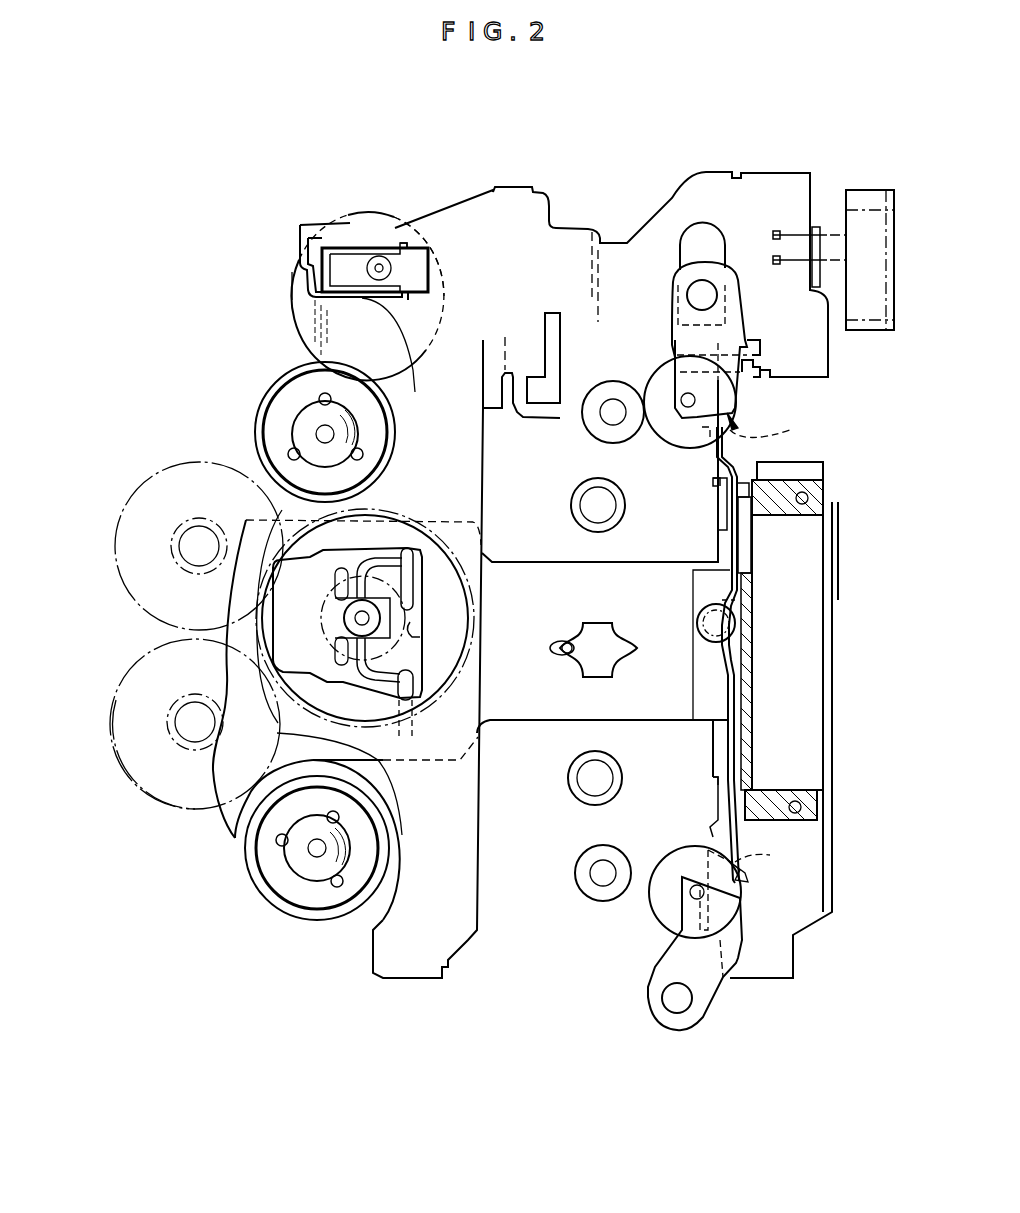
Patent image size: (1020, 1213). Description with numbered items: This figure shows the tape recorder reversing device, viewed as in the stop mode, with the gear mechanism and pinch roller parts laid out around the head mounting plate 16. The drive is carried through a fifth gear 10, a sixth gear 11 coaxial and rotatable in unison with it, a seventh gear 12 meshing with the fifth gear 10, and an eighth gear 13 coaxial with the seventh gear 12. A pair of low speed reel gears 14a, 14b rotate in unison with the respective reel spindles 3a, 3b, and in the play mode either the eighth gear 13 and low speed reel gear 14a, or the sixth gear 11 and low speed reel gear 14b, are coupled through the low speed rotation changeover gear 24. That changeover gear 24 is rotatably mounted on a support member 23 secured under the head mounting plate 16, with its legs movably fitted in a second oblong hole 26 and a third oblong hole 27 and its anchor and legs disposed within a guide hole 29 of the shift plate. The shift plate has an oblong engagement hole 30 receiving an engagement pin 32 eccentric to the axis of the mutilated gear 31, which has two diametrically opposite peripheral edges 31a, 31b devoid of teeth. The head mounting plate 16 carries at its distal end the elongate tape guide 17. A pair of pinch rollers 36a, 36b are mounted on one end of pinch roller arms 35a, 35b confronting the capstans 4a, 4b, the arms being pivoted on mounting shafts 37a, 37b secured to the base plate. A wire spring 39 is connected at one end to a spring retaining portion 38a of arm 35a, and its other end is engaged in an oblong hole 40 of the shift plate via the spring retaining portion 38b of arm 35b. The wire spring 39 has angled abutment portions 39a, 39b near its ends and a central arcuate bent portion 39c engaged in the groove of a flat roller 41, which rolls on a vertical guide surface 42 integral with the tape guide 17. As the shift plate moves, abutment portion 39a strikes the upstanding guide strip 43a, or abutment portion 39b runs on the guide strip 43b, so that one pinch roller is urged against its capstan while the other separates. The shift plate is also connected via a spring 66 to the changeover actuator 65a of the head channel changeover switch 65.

The reel spindle 3a is at (350, 868).
The reel spindle 3b is at (360, 440).
The capstan 4a is at (575, 875).
The capstan 4b is at (590, 420).
The fifth gear 10 is at (186, 463).
The sixth gear 11 is at (173, 538).
The seventh gear 12 is at (177, 807).
The eighth gear 13 is at (170, 708).
The low speed reel gear 14a is at (380, 835).
The low speed reel gear 14b is at (385, 405).
The head mounting plate 16 is at (525, 722).
The tape guide 17 is at (815, 590).
The support member 23 is at (345, 615).
The low speed rotation changeover gear 24 is at (398, 520).
The second oblong hole 26 is at (412, 688).
The third oblong hole 27 is at (413, 578).
The guide hole 29 is at (420, 636).
The engagement hole 30 is at (415, 280).
The mutilated gear 31 is at (288, 295).
The peripheral edge devoid of teeth 31a is at (297, 330).
The peripheral edge devoid of teeth 31b is at (440, 262).
The engagement pin 32 is at (410, 250).
The pinch roller arm 35a is at (662, 950).
The pinch roller arm 35b is at (745, 318).
The pinch roller 36a is at (660, 895).
The pinch roller 36b is at (655, 430).
The mounting shaft 37a is at (662, 1000).
The mounting shaft 37b is at (710, 283).
The spring retaining portion 38a is at (762, 856).
The spring retaining portion 38b is at (760, 435).
The wire spring 39 is at (712, 548).
The angled abutment portion 39a is at (712, 783).
The angled abutment portion 39b is at (712, 475).
The central arcuate bent portion 39c is at (705, 612).
The oblong hole 40 is at (765, 380).
The flat roller 41 is at (696, 627).
The vertical guide surface 42 is at (735, 662).
The upstanding guide strip 43a is at (712, 808).
The upstanding guide strip 43b is at (713, 500).
The head channel changeover switch 65 is at (860, 333).
The changeover actuator 65a is at (838, 240).
The spring 66 is at (788, 240).